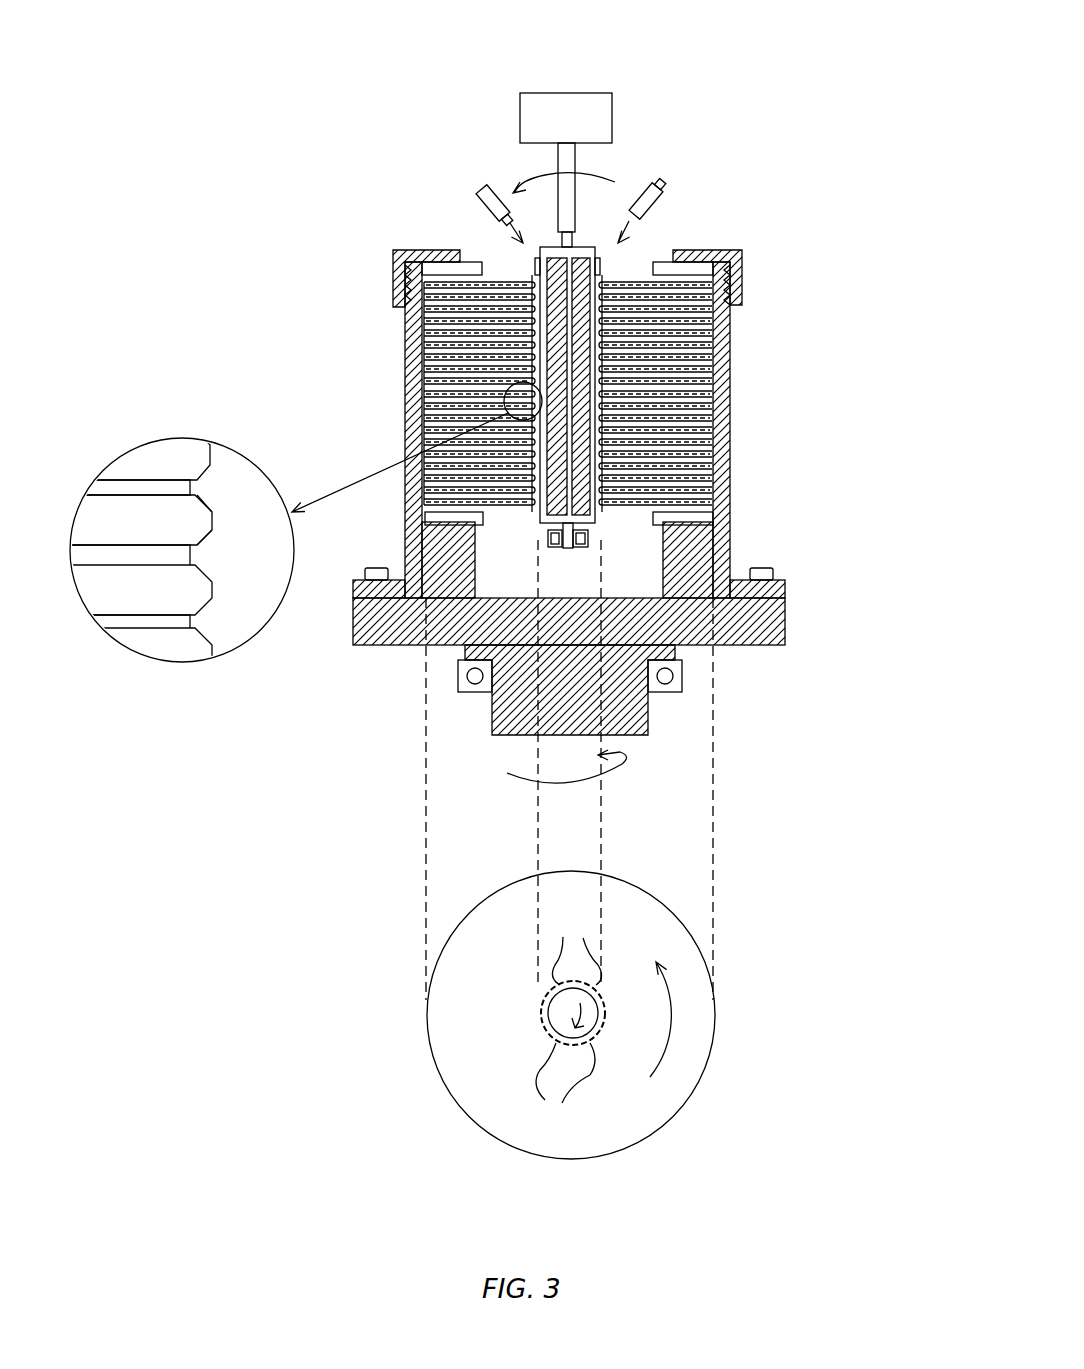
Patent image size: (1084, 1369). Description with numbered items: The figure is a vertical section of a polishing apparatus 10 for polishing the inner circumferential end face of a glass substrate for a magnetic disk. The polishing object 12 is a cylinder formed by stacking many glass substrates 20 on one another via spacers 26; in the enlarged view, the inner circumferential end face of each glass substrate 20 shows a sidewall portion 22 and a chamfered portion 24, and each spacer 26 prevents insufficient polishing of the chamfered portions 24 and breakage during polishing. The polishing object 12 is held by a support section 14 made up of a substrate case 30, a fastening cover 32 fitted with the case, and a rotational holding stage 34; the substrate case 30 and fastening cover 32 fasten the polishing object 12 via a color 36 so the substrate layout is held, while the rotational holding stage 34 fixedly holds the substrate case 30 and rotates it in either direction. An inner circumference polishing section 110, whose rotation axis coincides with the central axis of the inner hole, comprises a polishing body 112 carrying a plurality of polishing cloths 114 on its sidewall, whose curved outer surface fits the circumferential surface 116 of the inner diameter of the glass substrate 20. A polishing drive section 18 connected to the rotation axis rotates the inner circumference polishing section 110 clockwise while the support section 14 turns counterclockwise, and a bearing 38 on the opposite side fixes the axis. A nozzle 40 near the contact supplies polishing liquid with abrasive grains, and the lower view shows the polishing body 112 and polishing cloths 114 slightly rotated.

The polishing apparatus 10 is at (498, 118).
The polishing object 12 is at (637, 265).
The support section 14 is at (833, 222).
The polishing drive section 18 is at (578, 100).
The glass substrate 20 is at (492, 275).
The sidewall portion 22 is at (220, 513).
The chamfered portion 24 is at (214, 505).
The spacer 26 is at (202, 560).
The substrate case 30 is at (405, 548).
The fastening cover 32 is at (395, 270).
The rotational holding stage 34 is at (788, 603).
The color 36 is at (432, 262).
The bearing 38 is at (580, 548).
The nozzle 40 is at (478, 190).
The inner circumference polishing section 110 is at (596, 237).
The polishing body 112 is at (548, 540).
The polishing cloth 114 is at (538, 517).
The circumferential surface of inner diameter 116 is at (430, 348).